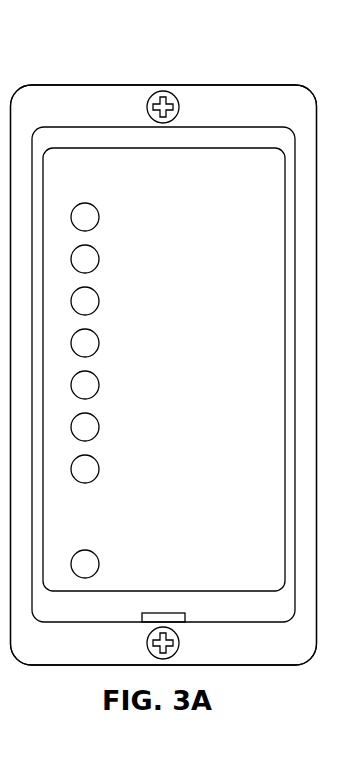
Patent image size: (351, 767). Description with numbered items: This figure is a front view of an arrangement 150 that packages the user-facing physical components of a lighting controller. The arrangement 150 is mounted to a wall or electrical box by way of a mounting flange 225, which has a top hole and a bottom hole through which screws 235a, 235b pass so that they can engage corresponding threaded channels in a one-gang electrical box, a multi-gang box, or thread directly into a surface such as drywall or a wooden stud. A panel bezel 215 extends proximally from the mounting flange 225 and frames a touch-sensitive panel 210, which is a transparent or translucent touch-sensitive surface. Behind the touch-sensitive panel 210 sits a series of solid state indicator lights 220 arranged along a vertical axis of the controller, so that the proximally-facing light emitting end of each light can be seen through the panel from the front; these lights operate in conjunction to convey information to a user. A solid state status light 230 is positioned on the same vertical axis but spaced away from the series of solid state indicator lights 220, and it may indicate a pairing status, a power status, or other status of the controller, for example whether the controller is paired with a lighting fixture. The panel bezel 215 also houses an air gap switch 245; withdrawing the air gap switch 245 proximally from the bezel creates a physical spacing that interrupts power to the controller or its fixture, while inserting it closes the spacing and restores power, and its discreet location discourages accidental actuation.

The arrangement 150 is at (218, 58).
The mounting flange 225 is at (258, 85).
The panel bezel 215 is at (244, 127).
The touch-sensitive panel 210 is at (212, 148).
The screw 235a is at (180, 104).
The screw 235b is at (180, 640).
The series of solid state indicator lights 220 is at (112, 203).
The solid state status light 230 is at (88, 551).
The air gap switch 245 is at (168, 613).